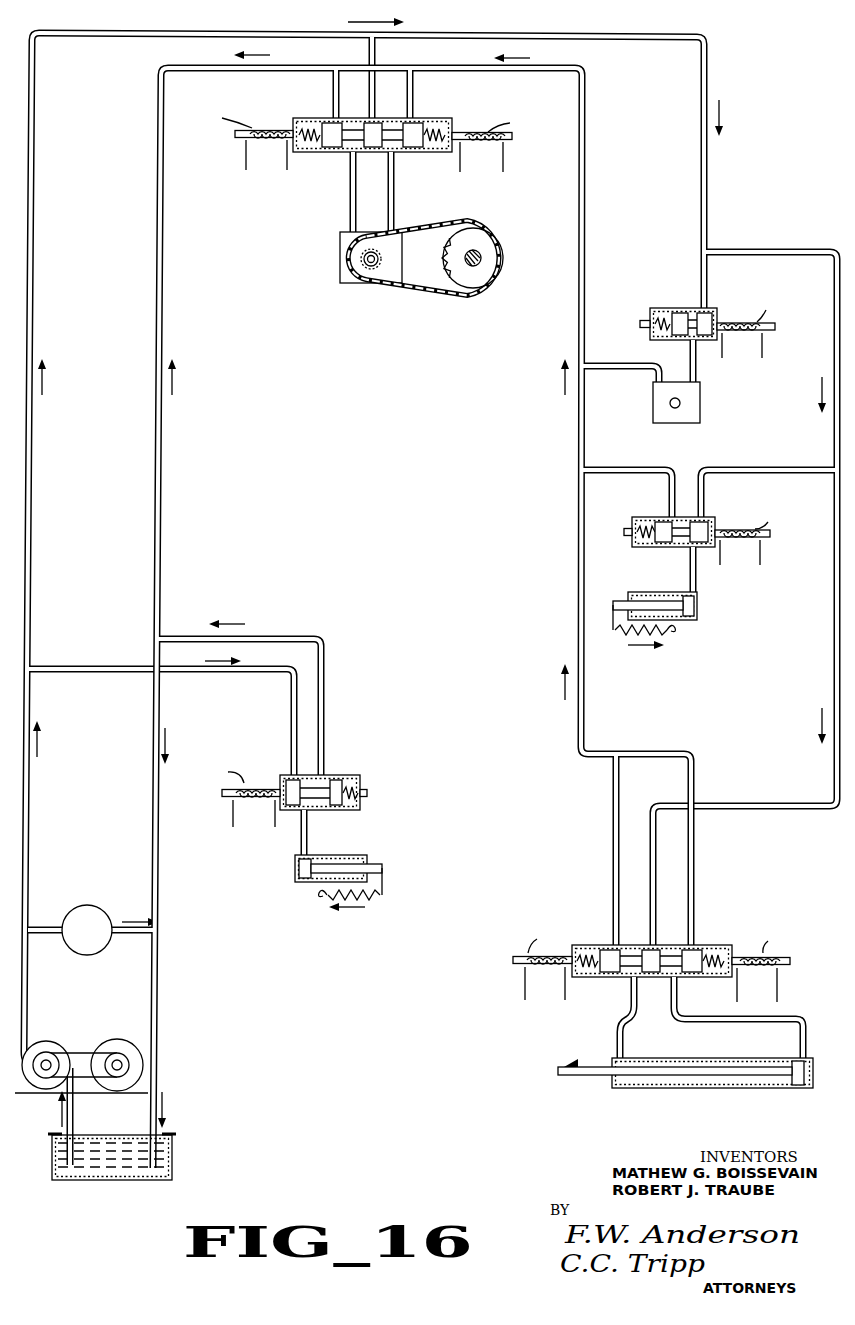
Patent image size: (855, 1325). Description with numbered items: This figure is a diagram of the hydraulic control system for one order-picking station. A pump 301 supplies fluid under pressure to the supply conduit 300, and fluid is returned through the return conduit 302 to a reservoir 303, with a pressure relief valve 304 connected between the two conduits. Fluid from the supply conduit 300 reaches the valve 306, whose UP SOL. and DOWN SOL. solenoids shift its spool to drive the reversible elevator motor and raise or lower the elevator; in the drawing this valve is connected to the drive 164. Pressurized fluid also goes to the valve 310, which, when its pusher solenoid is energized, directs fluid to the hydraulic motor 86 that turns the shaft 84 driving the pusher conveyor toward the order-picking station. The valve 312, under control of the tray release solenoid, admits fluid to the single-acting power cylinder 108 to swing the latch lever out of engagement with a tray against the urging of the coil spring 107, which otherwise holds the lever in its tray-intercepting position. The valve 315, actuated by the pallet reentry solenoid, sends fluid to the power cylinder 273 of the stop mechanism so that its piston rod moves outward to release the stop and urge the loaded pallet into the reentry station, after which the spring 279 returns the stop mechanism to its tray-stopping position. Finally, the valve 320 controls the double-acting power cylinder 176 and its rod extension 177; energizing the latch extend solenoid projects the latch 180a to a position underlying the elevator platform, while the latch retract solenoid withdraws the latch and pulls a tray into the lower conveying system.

The supply conduit 300 is at (700, 199).
The return conduit 302 is at (580, 185).
The elevator control valve 306 is at (317, 153).
The chain drive 164 is at (340, 247).
The pusher control valve 310 is at (686, 310).
The drive sprocket shaft 84 is at (668, 405).
The hydraulic motor 86 is at (697, 403).
The tray release valve 312 is at (668, 517).
The single-acting hydraulic power cylinder 108 is at (668, 592).
The coil spring 107 is at (672, 634).
The pallet reentry valve 315 is at (335, 777).
The single-acting power cylinder 273 is at (345, 855).
The spring 279 is at (322, 895).
The pressure relief valve 304 is at (68, 946).
The pump 301 is at (55, 1040).
The reservoir 303 is at (173, 1152).
The latch control valve 320 is at (591, 979).
The double-acting hydraulic power cylinder 176 is at (718, 1088).
The rod extension 177 is at (604, 1076).
The latch plate 180a is at (566, 1062).